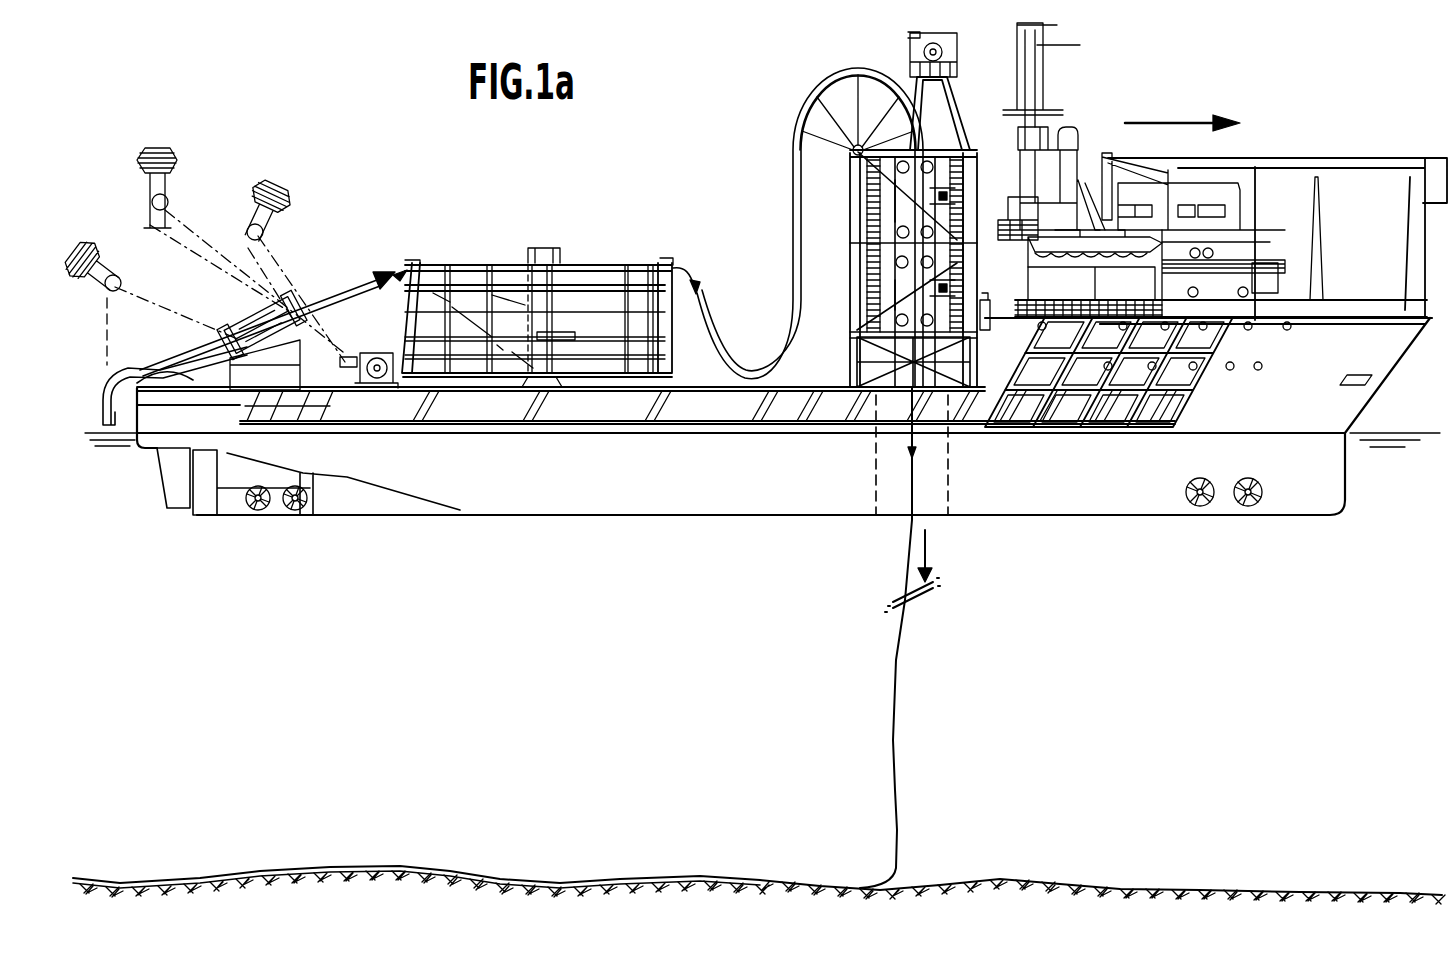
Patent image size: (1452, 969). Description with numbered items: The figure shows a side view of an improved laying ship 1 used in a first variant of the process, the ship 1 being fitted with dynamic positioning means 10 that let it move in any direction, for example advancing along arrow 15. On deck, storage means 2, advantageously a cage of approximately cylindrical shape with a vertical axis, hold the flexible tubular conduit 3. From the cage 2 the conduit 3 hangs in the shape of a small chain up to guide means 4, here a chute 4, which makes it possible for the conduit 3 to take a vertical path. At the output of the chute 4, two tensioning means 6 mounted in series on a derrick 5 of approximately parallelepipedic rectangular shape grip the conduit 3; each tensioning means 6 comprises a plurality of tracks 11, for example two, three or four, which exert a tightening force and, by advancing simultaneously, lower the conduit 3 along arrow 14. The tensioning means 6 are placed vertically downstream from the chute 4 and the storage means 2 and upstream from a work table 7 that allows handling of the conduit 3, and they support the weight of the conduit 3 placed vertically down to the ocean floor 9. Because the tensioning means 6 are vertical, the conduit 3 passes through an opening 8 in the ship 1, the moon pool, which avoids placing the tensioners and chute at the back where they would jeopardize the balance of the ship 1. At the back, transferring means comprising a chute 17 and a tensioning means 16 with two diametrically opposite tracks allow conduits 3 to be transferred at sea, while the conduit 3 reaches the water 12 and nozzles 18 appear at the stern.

The laying ship 1 is at (1065, 525).
The storage means 2 is at (597, 265).
The flexible tubular conduit 3 is at (350, 287).
The guide means 4 is at (833, 97).
The derrick 5 is at (975, 160).
The tensioning means 6 is at (960, 196).
The work table 7 is at (857, 357).
The opening 8 is at (943, 485).
The ocean floor 9 is at (1177, 890).
The dynamic positioning means 10 is at (302, 512).
The tracks 11 is at (893, 270).
The water 12 is at (1102, 784).
The arrow 14 is at (927, 543).
The arrow 15 is at (1185, 92).
The tensioning means 16 is at (215, 320).
The chute 17 is at (120, 418).
The spray nozzles 18 is at (148, 208).